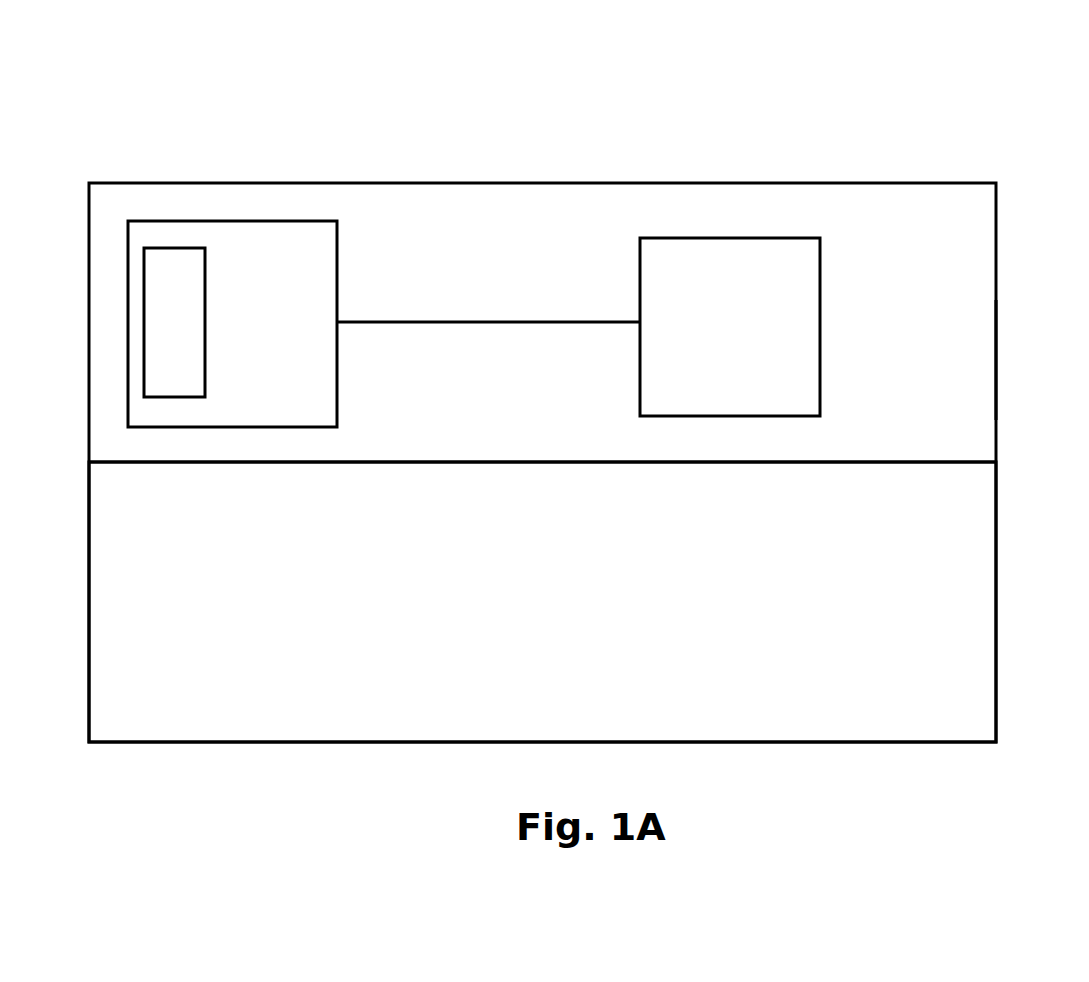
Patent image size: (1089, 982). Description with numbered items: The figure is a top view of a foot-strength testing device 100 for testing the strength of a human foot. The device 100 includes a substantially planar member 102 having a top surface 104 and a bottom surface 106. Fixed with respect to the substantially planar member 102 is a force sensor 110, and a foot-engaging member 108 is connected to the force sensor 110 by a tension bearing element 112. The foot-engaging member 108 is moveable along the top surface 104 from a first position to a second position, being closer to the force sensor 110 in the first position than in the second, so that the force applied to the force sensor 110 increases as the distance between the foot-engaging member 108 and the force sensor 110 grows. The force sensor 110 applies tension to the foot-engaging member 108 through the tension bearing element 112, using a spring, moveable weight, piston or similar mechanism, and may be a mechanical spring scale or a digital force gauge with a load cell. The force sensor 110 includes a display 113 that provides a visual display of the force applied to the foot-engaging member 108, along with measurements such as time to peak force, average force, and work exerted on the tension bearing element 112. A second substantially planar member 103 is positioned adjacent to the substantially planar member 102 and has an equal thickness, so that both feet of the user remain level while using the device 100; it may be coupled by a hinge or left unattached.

The foot-strength testing device 100 is at (873, 122).
The substantially planar member 102 is at (973, 180).
The second substantially planar member 103 is at (997, 632).
The top surface 104 is at (662, 205).
The bottom surface 106 is at (968, 347).
The foot-engaging member 108 is at (820, 362).
The force sensor 110 is at (337, 367).
The tension bearing element 112 is at (484, 320).
The display 113 is at (205, 317).